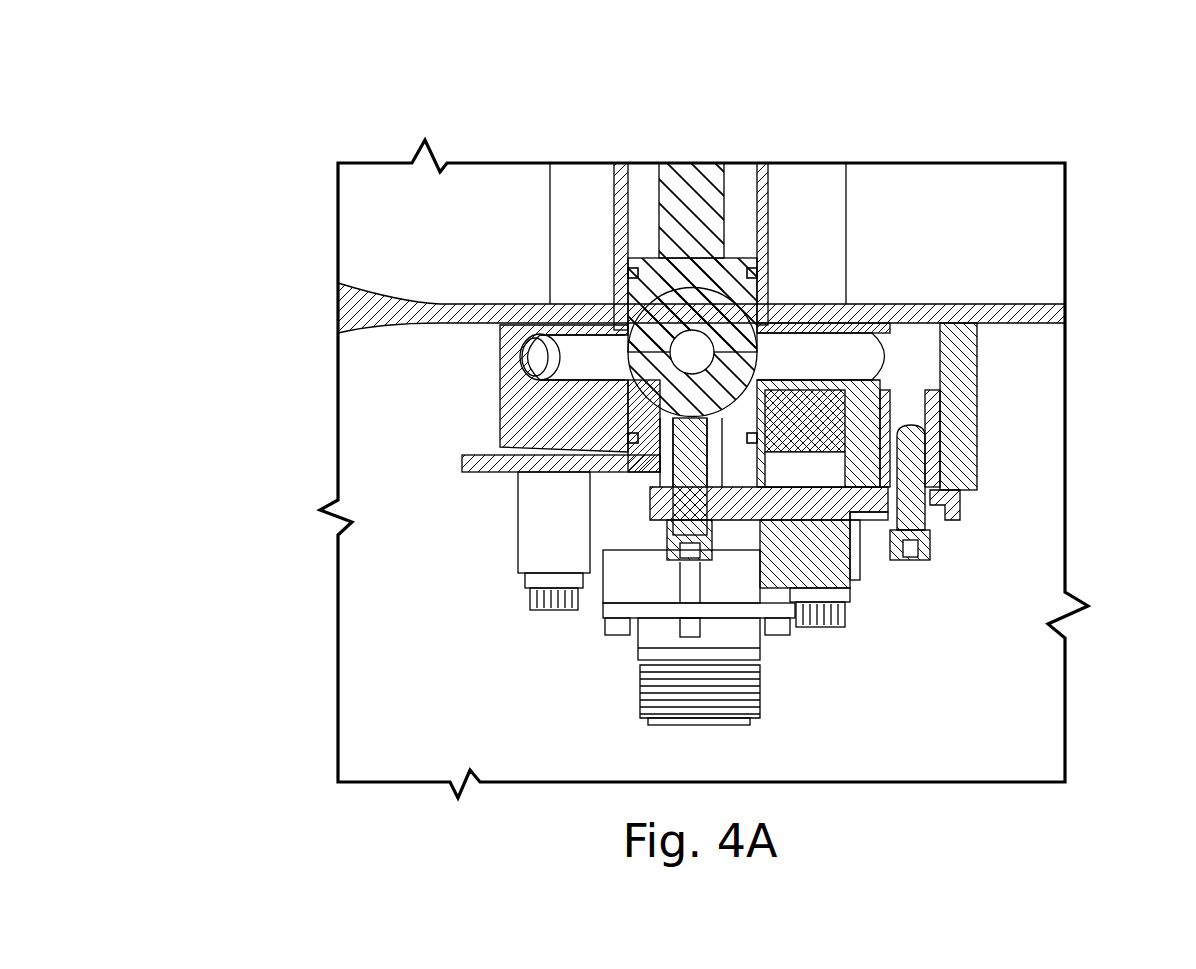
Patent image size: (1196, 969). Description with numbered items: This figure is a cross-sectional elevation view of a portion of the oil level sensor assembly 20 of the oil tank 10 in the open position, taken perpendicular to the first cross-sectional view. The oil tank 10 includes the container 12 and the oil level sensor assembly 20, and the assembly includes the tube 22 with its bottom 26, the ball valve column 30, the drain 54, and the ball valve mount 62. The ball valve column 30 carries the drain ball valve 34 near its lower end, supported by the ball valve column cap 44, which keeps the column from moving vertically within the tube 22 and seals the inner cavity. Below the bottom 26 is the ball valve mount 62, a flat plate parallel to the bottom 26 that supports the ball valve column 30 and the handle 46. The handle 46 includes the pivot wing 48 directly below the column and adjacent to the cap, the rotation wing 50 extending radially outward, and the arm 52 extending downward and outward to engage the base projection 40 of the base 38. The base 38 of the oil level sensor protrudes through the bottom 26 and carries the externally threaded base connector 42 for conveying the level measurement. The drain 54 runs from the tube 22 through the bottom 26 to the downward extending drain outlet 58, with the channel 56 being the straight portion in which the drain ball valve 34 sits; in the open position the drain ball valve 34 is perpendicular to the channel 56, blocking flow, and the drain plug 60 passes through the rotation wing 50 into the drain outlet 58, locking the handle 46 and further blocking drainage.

The oil tank 10 is at (303, 154).
The container 12 is at (955, 213).
The oil level sensor assembly 20 is at (516, 597).
The tube 22 is at (578, 208).
The bottom 26 is at (497, 313).
The ball valve column 30 is at (695, 198).
The drain ball valve 34 is at (640, 370).
The base 38 is at (598, 608).
The base projection 40 is at (860, 563).
The base connector 42 is at (643, 700).
The ball valve column cap 44 is at (808, 550).
The handle 46 is at (866, 534).
The pivot wing 48 is at (655, 490).
The rotation wing 50 is at (938, 525).
The arm 52 is at (717, 480).
The drain 54 is at (900, 342).
The channel 56 is at (807, 352).
The drain outlet 58 is at (975, 490).
The drain plug 60 is at (920, 532).
The ball valve mount 62 is at (505, 478).